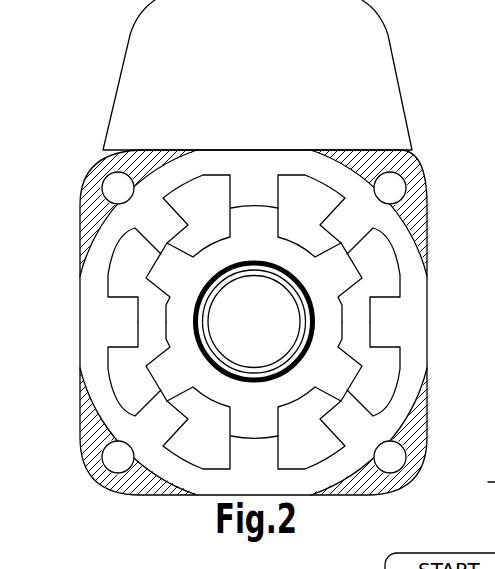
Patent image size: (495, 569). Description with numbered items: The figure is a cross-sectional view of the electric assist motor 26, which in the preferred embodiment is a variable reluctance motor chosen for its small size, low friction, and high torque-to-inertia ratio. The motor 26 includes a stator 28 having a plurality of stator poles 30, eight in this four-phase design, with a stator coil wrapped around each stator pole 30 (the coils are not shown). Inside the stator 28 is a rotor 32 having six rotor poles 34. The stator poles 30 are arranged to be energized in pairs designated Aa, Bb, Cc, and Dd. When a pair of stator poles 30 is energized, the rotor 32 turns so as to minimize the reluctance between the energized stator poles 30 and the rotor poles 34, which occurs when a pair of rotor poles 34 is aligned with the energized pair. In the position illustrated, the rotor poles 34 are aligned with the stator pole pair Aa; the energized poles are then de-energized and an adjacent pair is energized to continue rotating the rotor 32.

The electric assist motor 26 is at (432, 272).
The stator 28 is at (236, 285).
The stator poles 30 is at (282, 193).
The rotor 32 is at (322, 311).
The rotor poles 34 is at (145, 277).